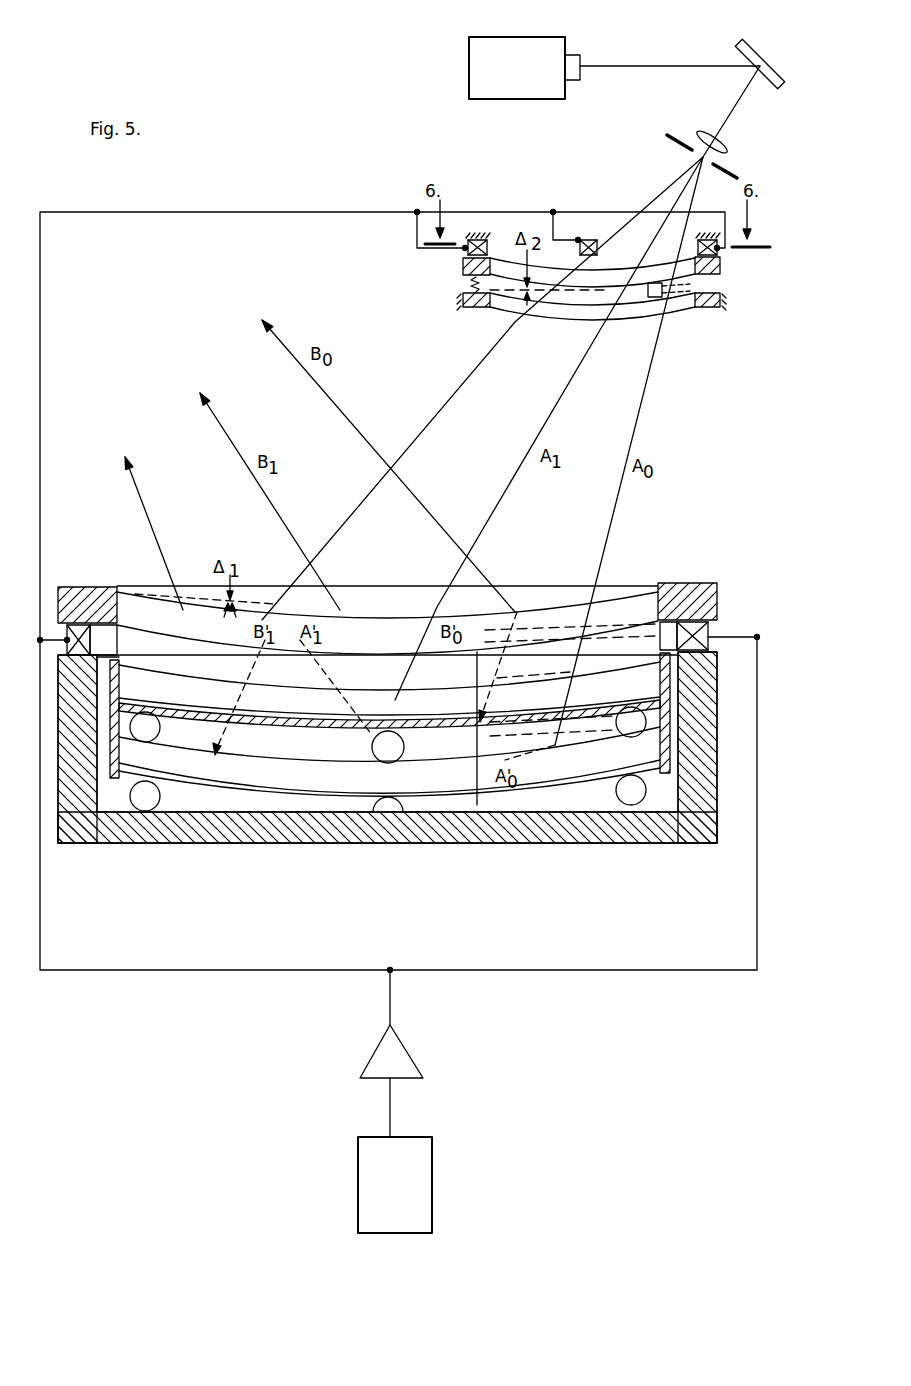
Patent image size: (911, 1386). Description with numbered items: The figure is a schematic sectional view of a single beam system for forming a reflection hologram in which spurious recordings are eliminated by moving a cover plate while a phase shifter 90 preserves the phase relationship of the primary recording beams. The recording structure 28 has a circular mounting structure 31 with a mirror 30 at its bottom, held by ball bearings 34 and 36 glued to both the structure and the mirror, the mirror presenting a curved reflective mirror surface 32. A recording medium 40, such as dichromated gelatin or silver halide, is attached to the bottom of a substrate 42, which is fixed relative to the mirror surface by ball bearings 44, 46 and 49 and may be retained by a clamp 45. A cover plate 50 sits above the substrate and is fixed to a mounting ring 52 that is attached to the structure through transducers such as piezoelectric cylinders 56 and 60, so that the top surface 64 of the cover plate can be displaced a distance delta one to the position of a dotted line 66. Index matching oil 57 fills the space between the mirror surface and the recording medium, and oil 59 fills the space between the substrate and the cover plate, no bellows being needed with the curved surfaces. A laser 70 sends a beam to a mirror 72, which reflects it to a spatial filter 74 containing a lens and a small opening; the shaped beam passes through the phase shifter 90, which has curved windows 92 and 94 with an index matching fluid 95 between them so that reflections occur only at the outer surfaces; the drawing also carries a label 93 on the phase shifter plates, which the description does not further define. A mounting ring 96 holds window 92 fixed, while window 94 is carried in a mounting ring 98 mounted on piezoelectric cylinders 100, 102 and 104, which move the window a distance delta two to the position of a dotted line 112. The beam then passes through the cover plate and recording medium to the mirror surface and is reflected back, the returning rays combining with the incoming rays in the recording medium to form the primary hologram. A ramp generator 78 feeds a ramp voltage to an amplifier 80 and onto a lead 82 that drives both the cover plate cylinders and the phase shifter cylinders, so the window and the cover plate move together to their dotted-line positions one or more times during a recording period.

The recording structure 28 is at (694, 870).
The mirror 30 is at (348, 814).
The mounting structure 31 is at (718, 838).
The mirror surface 32 is at (355, 762).
The ball bearing 34 is at (152, 811).
The ball bearing 36 is at (628, 805).
The recording medium 40 is at (200, 722).
The substrate 42 is at (130, 675).
The ball bearing 44 is at (130, 727).
The clamp 45 is at (115, 812).
The ball bearing 46 is at (700, 745).
The ball bearing 49 is at (410, 812).
The cover plate 50 is at (400, 606).
The mounting ring 52 is at (90, 587).
The piezoelectric cylinder 56 is at (67, 632).
The index matching fluid 57 is at (646, 722).
The index matching fluid 59 is at (708, 628).
The piezoelectric cylinder 60 is at (706, 620).
The top surface 64 is at (512, 608).
The dotted line 66 is at (250, 604).
The laser 70 is at (565, 38).
The mirror 72 is at (775, 56).
The spatial filter 74 is at (678, 132).
The ramp generator 78 is at (430, 1137).
The amplifier 80 is at (418, 1078).
The lead 82 is at (645, 972).
The phase shifter 90 is at (462, 306).
The window 92 is at (615, 312).
The upper lens plate 93 is at (563, 320).
The window 94 is at (463, 263).
The index matching fluid 95 is at (705, 283).
The mounting ring 96 is at (716, 308).
The mounting ring 98 is at (470, 280).
The piezoelectric cylinder 100 is at (470, 240).
The piezoelectric cylinder 102 is at (590, 240).
The piezoelectric cylinder 104 is at (712, 240).
The dotted line 112 is at (505, 295).